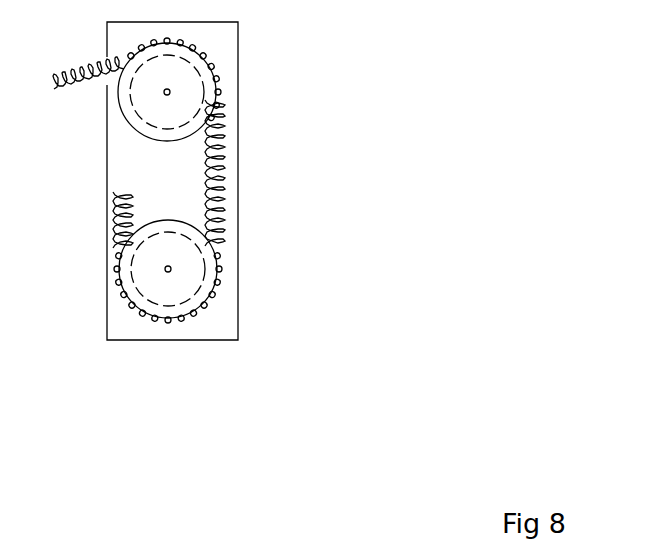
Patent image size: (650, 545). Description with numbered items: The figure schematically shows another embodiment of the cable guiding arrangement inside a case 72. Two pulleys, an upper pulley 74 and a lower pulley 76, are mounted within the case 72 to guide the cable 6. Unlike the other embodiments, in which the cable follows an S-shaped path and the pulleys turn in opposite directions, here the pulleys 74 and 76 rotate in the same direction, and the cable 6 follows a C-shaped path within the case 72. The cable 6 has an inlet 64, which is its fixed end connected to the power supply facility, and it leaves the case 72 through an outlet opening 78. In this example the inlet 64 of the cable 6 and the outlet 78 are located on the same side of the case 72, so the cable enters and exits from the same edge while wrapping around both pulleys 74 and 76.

The cable 6 is at (224, 155).
The inlet 64 is at (113, 193).
The case 72 is at (238, 317).
The upper pulley 74 is at (190, 80).
The lower pulley 76 is at (193, 260).
The opening 78 is at (108, 84).